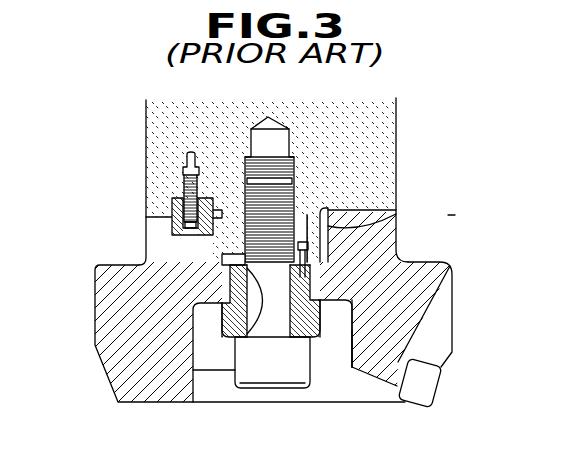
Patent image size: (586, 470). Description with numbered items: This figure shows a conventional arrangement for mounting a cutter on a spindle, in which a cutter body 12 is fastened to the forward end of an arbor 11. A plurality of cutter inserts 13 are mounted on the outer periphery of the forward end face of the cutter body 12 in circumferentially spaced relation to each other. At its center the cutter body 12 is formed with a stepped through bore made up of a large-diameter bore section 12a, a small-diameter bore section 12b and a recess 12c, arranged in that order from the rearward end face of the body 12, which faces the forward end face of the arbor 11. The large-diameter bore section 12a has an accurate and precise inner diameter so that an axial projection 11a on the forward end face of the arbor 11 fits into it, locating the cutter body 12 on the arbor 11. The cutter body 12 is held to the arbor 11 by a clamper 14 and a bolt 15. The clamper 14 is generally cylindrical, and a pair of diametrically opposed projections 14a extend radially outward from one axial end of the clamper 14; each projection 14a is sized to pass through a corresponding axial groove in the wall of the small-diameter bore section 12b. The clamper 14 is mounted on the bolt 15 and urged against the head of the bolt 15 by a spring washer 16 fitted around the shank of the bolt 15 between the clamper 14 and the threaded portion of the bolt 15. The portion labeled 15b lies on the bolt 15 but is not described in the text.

The arbor 11 is at (398, 140).
The axial projection 11a is at (362, 227).
The cutter body 12 is at (442, 257).
The large-diameter bore section 12a is at (231, 227).
The small-diameter bore section 12b is at (354, 312).
The recess 12c is at (354, 342).
The cutter inserts 13 is at (428, 380).
The clamper 14 is at (352, 368).
The projections 14a is at (228, 320).
The bolt 15 is at (283, 388).
The end cap face 15b is at (268, 368).
The spring washer 16 is at (239, 339).